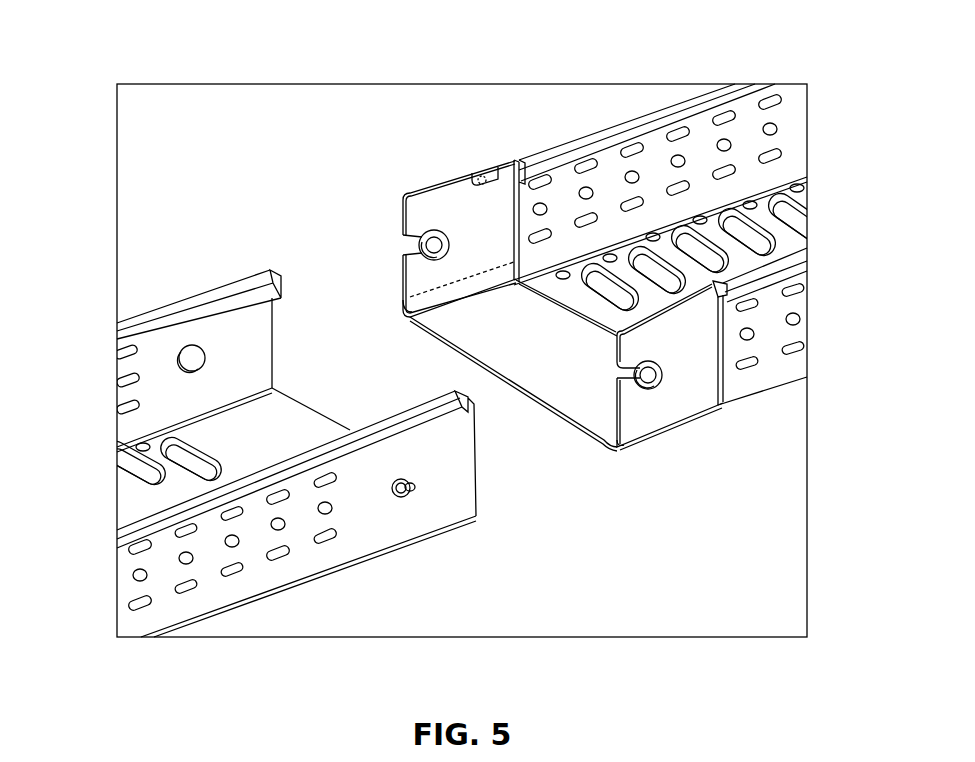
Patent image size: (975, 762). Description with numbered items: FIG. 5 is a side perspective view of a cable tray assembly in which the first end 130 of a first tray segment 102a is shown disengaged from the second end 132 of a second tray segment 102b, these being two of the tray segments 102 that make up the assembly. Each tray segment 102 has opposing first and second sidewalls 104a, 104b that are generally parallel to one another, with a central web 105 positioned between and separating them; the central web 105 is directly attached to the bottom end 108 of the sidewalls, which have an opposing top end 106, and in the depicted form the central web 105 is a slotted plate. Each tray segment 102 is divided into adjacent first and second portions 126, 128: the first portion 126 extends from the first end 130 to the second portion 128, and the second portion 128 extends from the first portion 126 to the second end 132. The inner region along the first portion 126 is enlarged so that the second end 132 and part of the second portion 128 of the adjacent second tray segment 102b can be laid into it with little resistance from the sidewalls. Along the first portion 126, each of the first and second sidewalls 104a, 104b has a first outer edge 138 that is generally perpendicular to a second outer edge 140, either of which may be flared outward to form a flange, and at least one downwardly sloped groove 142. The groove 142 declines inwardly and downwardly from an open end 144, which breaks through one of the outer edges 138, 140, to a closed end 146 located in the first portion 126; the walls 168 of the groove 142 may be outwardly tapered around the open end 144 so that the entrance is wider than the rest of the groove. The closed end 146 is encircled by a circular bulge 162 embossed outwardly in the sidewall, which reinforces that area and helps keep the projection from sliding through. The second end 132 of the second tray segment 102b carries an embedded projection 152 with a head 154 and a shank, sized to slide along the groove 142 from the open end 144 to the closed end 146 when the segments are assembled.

The tray segment 102 is at (476, 362).
The first tray segment 102a is at (757, 383).
The second tray segment 102b is at (350, 550).
The first sidewall 104a is at (447, 507).
The second sidewall 104b is at (257, 341).
The central web 105 is at (283, 420).
The top end 106 is at (597, 130).
The bottom end 108 is at (153, 617).
The first portion 126 is at (675, 413).
The second portion 128 is at (393, 527).
The first end 130 is at (563, 403).
The second end 132 is at (340, 432).
The first outer edge 138 is at (405, 282).
The second outer edge 140 is at (643, 323).
The downwardly sloped groove 142 is at (673, 413).
The open end 144 is at (413, 242).
The closed end 146 is at (658, 370).
The embedded projection 152 is at (420, 497).
The head 154 is at (193, 357).
The circular bulge 162 is at (740, 262).
The walls 168 is at (432, 232).